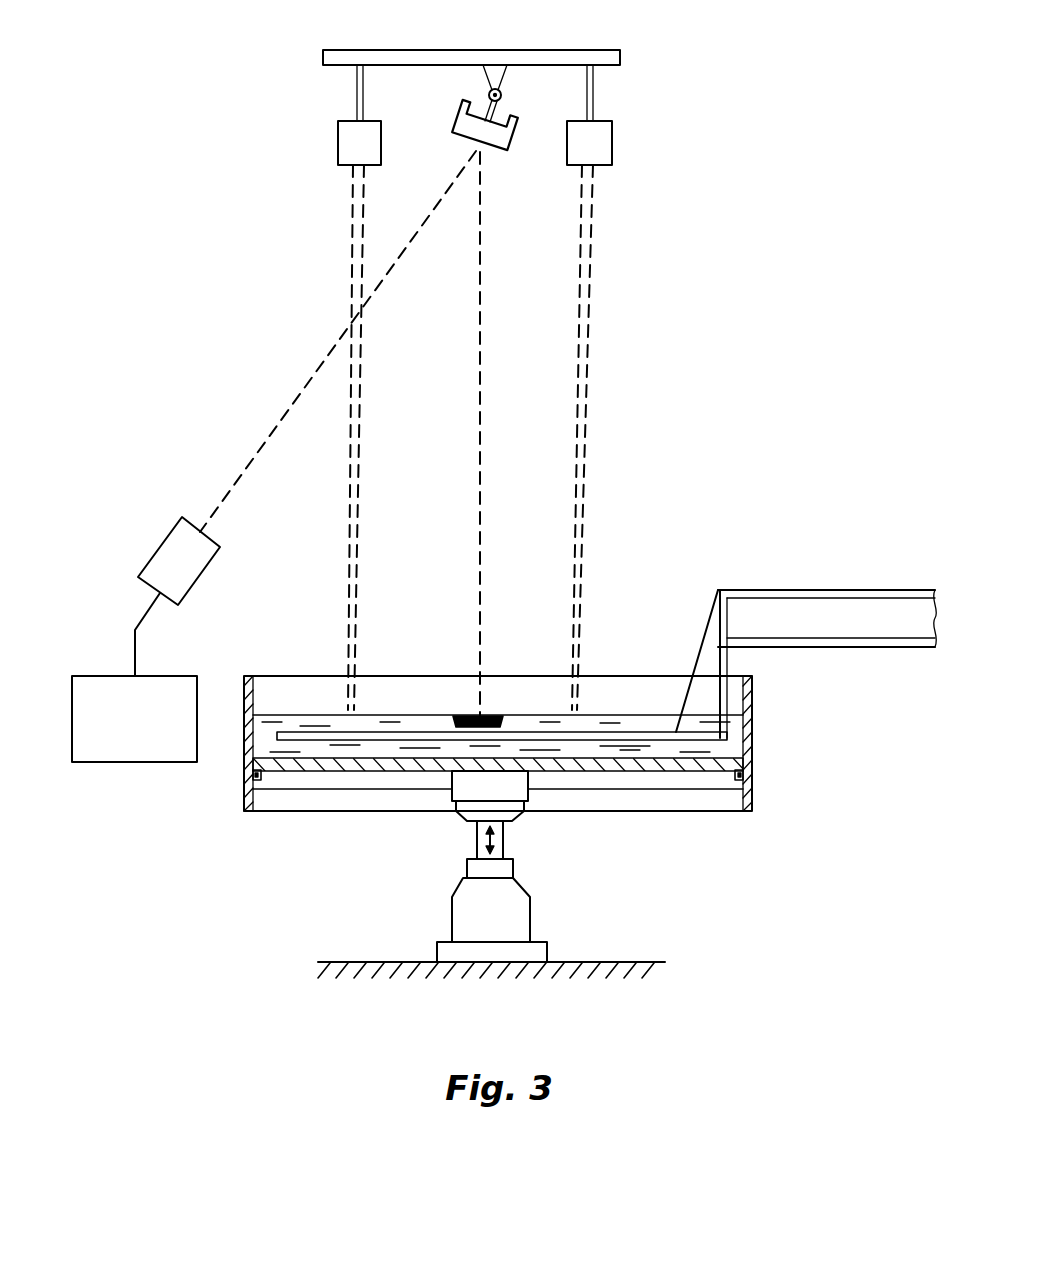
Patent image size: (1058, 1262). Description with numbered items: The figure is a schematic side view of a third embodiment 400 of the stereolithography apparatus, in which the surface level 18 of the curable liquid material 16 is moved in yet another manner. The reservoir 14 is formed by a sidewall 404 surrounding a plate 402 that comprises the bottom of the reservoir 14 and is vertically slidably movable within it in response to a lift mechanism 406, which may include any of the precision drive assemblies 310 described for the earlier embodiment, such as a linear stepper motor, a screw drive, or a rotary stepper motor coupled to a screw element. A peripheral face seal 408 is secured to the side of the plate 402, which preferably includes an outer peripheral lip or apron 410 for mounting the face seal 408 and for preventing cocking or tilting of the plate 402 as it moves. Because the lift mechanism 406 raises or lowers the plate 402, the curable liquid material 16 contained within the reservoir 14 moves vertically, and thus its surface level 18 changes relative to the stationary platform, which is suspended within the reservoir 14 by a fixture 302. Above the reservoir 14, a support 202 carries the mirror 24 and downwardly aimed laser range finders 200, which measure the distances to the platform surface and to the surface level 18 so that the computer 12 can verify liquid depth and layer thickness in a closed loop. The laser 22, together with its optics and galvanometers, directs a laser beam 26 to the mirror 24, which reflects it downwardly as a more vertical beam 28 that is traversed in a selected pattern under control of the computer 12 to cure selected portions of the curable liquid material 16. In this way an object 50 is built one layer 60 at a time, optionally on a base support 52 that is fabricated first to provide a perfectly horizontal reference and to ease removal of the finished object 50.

The computer 12 is at (94, 690).
The reservoir 14 is at (182, 802).
The curable liquid material 16 is at (737, 730).
The surface level 18 is at (657, 713).
The laser 22 is at (171, 553).
The mirror 24 is at (502, 133).
The laser beam 26 is at (316, 372).
The beam 28 is at (478, 388).
The object 50 is at (493, 693).
The support 52 is at (507, 727).
The layer 60 is at (450, 722).
The laser range finder 200 is at (350, 140).
The support 202 is at (620, 55).
The fixture 302 is at (856, 578).
The drive assembly 310 is at (520, 910).
The apparatus embodiment 400 is at (748, 316).
The plate 402 is at (663, 763).
The sidewall 404 is at (244, 688).
The lift mechanism 406 is at (392, 878).
The peripheral face seal 408 is at (750, 775).
The outer peripheral lip 410 is at (262, 781).